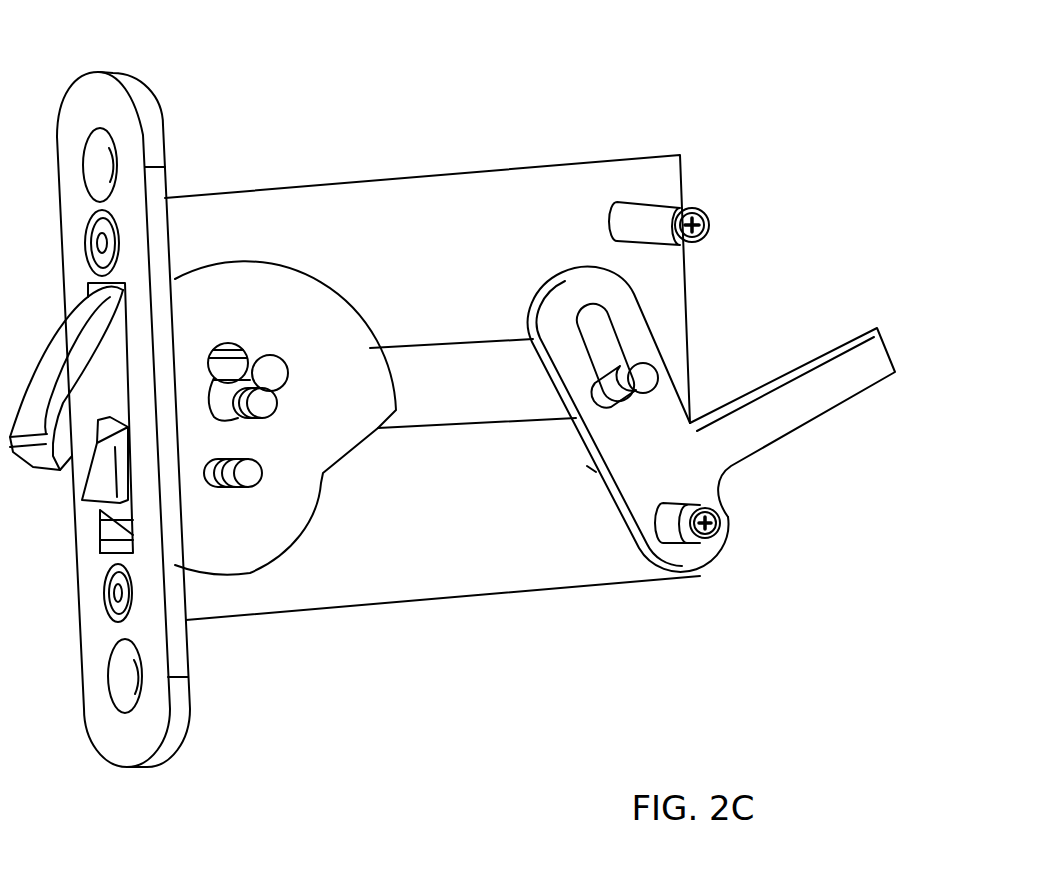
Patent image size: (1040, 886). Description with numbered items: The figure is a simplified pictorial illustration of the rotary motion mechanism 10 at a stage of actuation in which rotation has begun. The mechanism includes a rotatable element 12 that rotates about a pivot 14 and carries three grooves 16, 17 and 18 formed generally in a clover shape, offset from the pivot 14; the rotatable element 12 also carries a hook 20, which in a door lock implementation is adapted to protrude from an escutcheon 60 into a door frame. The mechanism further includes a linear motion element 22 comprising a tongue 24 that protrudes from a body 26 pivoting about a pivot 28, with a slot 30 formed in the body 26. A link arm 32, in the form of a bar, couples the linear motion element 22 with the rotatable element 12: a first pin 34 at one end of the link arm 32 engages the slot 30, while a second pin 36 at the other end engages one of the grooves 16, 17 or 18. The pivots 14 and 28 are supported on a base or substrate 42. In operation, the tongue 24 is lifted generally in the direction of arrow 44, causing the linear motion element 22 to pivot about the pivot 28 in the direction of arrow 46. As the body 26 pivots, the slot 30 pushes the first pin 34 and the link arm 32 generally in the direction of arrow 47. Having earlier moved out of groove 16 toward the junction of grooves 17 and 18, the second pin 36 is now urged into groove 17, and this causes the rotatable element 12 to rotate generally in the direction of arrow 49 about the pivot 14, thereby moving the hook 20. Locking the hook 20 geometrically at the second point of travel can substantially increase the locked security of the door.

The rotary motion mechanism 10 is at (552, 109).
The rotatable element 12 is at (293, 292).
The pivot 14 is at (243, 473).
The groove 16 is at (275, 368).
The groove 17 is at (223, 418).
The groove 18 is at (230, 347).
The hook 20 is at (67, 452).
The linear motion element 22 is at (710, 428).
The tongue 24 is at (852, 350).
The body 26 is at (622, 488).
The pivot 28 is at (720, 537).
The slot 30 is at (610, 330).
The link arm 32 is at (458, 353).
The first pin 34 is at (650, 372).
The second pin 36 is at (266, 406).
The base or substrate 42 is at (447, 583).
The arrow 44 is at (861, 477).
The arrow 46 is at (653, 498).
The arrow 47 is at (530, 382).
The arrow 49 is at (211, 246).
The escutcheon 60 is at (85, 95).